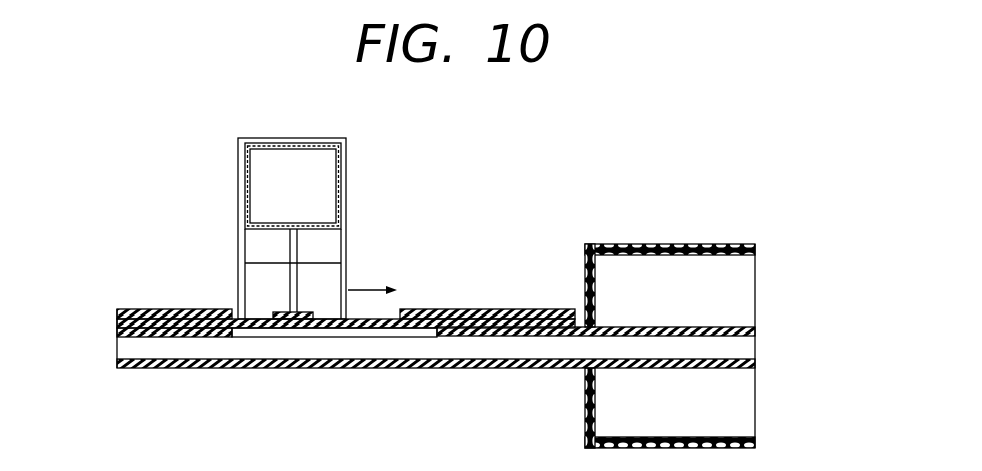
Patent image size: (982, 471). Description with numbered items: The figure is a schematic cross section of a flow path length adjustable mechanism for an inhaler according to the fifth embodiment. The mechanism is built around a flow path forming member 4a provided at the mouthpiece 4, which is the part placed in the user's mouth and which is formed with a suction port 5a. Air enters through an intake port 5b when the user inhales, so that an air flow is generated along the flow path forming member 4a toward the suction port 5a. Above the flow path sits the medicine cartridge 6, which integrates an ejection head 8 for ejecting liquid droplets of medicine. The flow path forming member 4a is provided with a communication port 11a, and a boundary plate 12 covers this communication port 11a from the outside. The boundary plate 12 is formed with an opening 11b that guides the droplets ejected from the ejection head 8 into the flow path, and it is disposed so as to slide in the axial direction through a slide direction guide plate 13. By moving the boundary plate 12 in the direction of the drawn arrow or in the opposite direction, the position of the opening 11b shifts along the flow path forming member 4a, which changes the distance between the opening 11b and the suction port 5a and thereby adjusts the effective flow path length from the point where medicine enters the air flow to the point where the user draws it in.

The mouthpiece 4 is at (665, 238).
The flow path forming member 4a is at (447, 369).
The suction port 5a is at (757, 341).
The intake port 5b is at (118, 348).
The medicine cartridge 6 is at (356, 232).
The ejection head 8 is at (305, 312).
The communication port 11a is at (363, 336).
The opening 11b is at (293, 329).
The boundary plate 12 is at (182, 309).
The slide direction guide plate 13 is at (500, 309).